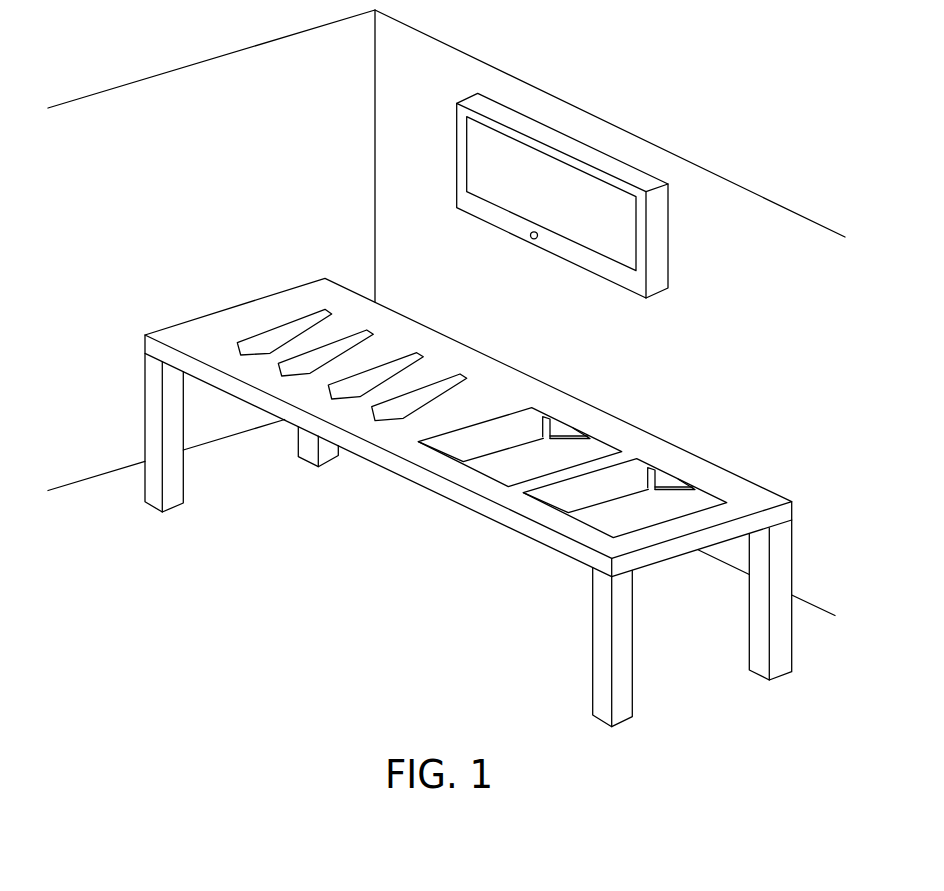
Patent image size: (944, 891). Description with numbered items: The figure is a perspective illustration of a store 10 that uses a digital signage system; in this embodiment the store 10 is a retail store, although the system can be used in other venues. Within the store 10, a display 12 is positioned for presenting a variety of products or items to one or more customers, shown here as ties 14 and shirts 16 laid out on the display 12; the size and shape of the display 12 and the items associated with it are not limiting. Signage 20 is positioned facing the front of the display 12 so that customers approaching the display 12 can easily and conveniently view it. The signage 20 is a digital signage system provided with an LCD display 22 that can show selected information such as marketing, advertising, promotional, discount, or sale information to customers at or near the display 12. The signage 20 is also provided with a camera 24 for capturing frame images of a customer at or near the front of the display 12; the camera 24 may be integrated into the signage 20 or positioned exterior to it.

The store 10 is at (182, 61).
The display 12 is at (472, 509).
The ties 14 is at (285, 318).
The shirts 16 is at (547, 421).
The signage 20 is at (542, 185).
The LCD display 22 is at (466, 143).
The camera 24 is at (533, 242).